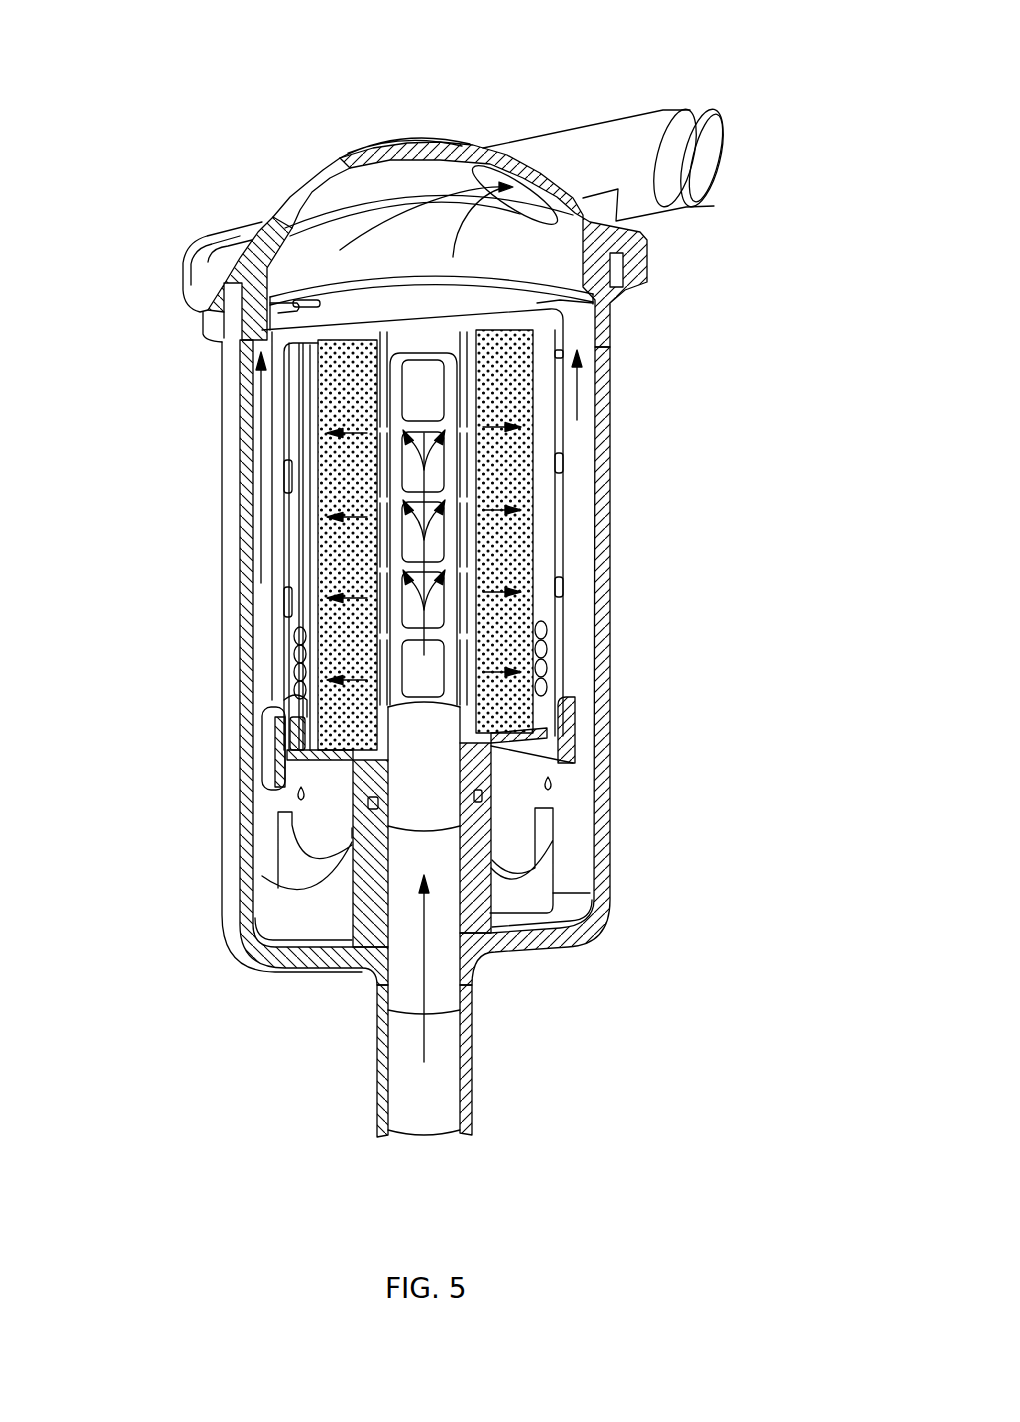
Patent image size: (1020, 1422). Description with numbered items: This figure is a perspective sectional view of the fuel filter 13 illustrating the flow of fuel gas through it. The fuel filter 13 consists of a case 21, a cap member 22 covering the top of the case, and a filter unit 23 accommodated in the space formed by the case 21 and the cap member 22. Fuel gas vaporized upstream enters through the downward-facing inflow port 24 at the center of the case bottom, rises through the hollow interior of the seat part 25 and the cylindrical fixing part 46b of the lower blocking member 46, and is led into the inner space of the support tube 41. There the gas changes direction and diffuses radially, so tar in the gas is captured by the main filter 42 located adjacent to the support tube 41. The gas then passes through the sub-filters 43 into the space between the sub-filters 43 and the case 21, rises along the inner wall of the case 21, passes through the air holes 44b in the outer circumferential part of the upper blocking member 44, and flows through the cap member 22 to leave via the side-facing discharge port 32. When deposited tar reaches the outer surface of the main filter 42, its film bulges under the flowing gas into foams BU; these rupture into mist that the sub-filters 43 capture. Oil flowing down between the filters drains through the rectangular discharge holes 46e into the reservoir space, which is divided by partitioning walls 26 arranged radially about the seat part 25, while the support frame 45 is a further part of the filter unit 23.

The fuel filter 13 is at (362, 127).
The case 21 is at (610, 550).
The cap member 22 is at (590, 55).
The filter unit 23 is at (570, 509).
The fuel gas inflow port 24 is at (470, 1060).
The seat part 25 is at (495, 778).
The partitioning walls 26 is at (324, 912).
The discharge port 32 is at (575, 142).
The support tube 41 is at (413, 385).
The main filter 42 is at (330, 621).
The sub-filters 43 is at (566, 612).
The upper blocking member 44 is at (470, 308).
The air holes 44b is at (598, 327).
The support frame 45 is at (562, 745).
The lower blocking member 46 is at (488, 930).
The cylindrical fixing part 46b is at (425, 799).
The discharge holes 46e is at (298, 762).
The foams BU is at (546, 690).